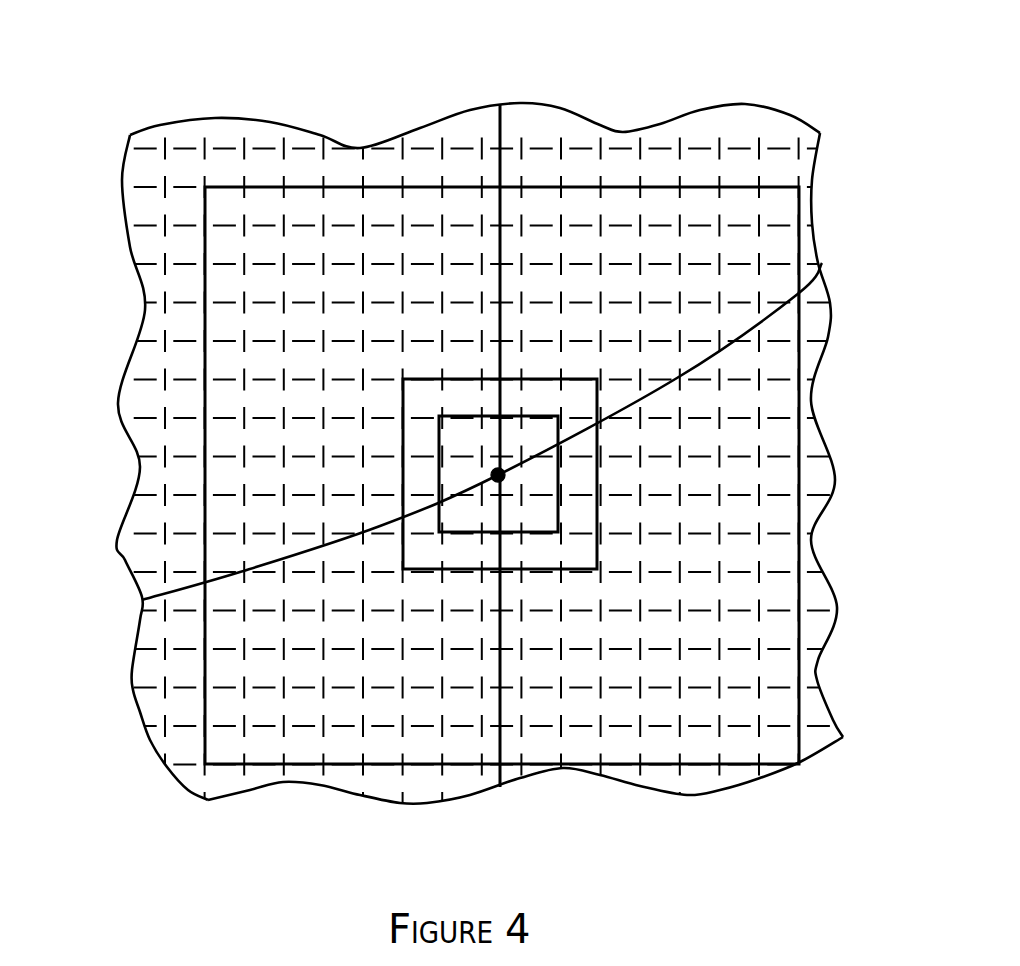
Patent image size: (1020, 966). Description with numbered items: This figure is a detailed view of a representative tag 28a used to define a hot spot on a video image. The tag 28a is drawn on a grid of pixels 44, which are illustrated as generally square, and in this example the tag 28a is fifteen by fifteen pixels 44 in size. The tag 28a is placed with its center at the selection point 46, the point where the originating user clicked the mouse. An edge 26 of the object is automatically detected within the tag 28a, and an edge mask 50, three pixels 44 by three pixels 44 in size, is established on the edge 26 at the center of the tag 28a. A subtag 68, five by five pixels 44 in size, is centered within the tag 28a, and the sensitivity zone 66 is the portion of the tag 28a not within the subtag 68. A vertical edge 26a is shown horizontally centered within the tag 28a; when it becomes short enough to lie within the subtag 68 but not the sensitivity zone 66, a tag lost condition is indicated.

The representative tag 28a is at (548, 80).
The pixels 44 is at (185, 138).
The sensitivity zone 66 is at (340, 653).
The vertical edge 26a is at (500, 172).
The edge 26 is at (822, 263).
The subtag 68 is at (597, 545).
The edge mask 50 is at (480, 416).
The selection point 46 is at (497, 473).